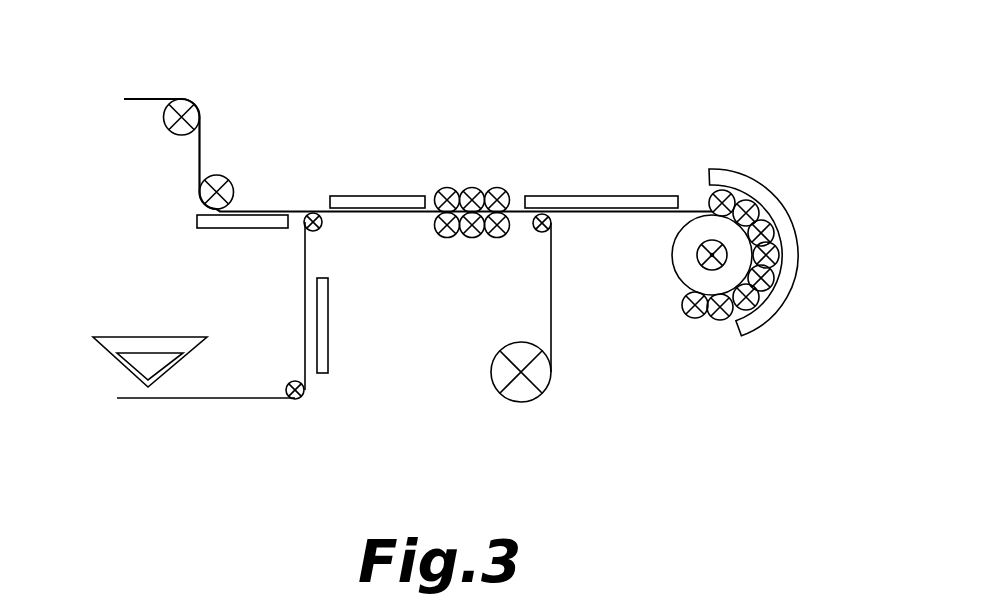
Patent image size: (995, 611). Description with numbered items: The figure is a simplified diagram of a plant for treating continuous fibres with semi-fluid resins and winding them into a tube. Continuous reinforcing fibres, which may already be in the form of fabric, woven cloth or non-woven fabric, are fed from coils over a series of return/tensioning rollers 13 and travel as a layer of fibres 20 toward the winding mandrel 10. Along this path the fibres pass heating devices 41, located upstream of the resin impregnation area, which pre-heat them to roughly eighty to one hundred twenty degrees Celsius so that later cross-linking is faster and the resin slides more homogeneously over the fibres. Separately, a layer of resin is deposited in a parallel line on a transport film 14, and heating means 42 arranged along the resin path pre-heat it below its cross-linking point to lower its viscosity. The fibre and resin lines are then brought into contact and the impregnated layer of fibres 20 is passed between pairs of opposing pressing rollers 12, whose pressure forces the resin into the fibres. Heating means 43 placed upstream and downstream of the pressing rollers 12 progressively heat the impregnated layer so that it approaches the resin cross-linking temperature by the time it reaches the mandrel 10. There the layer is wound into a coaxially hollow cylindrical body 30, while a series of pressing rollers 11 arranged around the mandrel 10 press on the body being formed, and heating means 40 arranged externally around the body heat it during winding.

The winding mandrel 10 is at (712, 257).
The pressing rollers 11 is at (779, 253).
The pressing rollers 12 is at (480, 165).
The return/tensioning rollers 13 is at (163, 115).
The transport film 14 is at (202, 400).
The layer of fibres 20 is at (200, 148).
The hollow cylindrical body 30 is at (680, 258).
The heating means 40 is at (772, 200).
The heating devices 41 is at (228, 228).
The heating means 42 is at (328, 327).
The heating means 43 is at (360, 195).